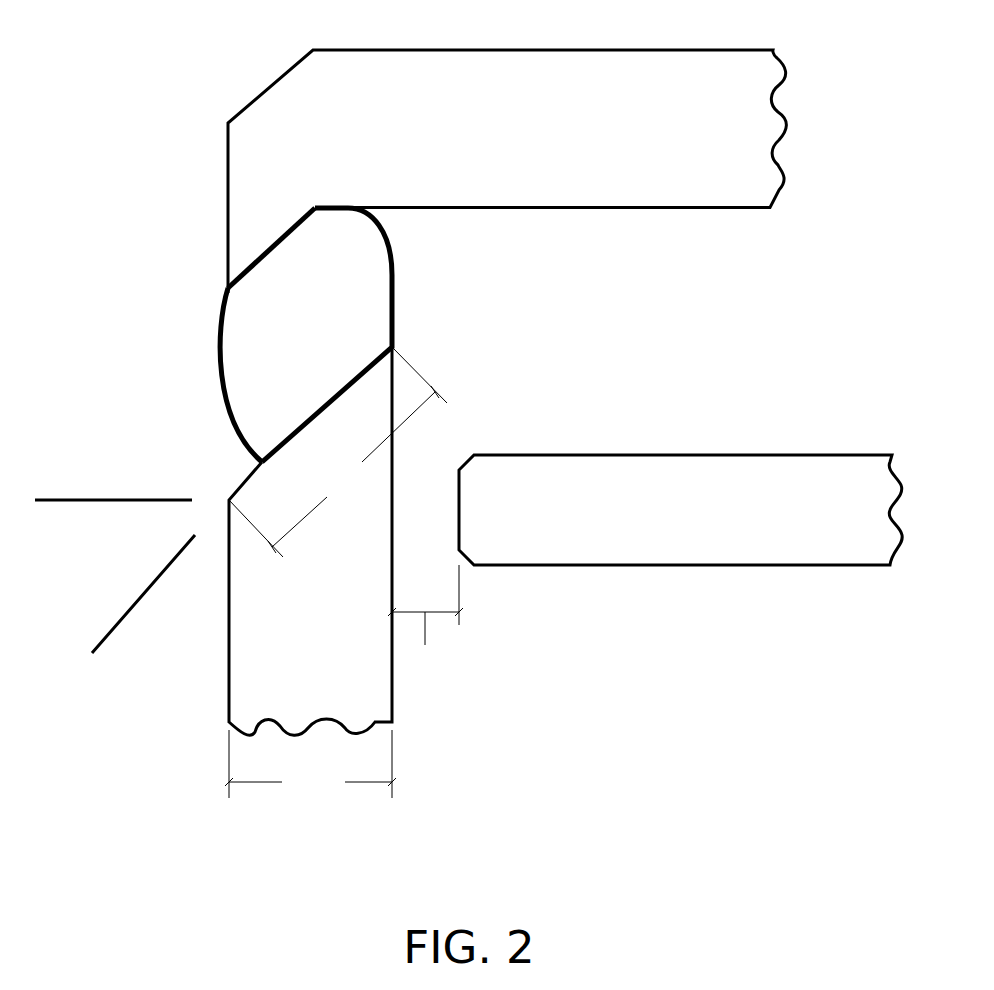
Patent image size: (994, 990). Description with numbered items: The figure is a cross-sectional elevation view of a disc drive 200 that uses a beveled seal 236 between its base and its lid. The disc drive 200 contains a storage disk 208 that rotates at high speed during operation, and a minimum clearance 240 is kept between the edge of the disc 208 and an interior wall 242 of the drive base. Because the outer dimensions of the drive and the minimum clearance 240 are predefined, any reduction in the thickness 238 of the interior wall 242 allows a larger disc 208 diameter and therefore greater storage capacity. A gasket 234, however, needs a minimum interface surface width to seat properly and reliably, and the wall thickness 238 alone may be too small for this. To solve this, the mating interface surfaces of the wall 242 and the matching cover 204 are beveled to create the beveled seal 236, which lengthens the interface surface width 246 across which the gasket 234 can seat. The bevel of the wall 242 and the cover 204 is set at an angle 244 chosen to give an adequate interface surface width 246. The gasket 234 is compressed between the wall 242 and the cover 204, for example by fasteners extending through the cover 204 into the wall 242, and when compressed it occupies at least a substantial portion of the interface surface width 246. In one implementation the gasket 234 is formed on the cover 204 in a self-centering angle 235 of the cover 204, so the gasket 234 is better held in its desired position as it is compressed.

The disc drive 200 is at (142, 80).
The cover 204 is at (508, 136).
The storage disk 208 is at (657, 524).
The gasket 234 is at (322, 340).
The self-centering angle 235 is at (315, 193).
The beveled seal 236 is at (160, 315).
The interior wall 242 is at (293, 620).
The interface surface width 246 is at (366, 490).
The minimum clearance 240 is at (405, 680).
The interior wall thickness 238 is at (293, 794).
The bevel angle 244 is at (72, 514).